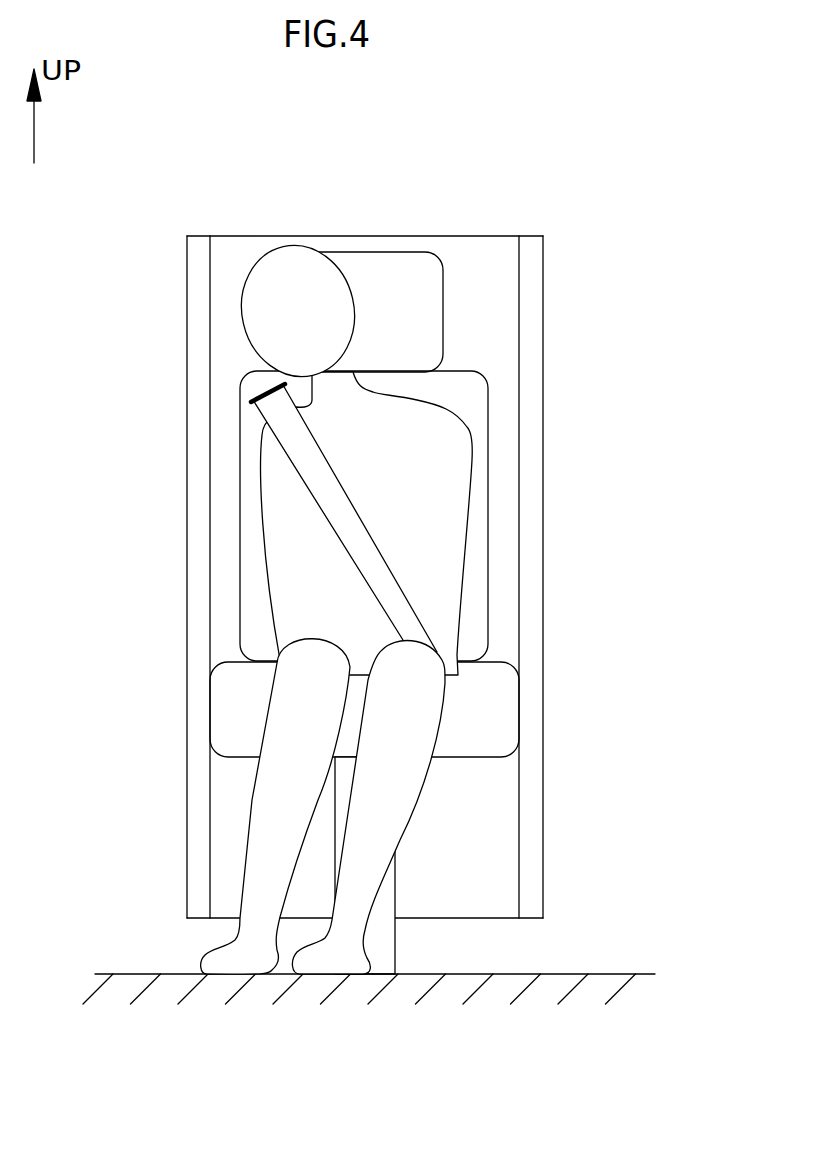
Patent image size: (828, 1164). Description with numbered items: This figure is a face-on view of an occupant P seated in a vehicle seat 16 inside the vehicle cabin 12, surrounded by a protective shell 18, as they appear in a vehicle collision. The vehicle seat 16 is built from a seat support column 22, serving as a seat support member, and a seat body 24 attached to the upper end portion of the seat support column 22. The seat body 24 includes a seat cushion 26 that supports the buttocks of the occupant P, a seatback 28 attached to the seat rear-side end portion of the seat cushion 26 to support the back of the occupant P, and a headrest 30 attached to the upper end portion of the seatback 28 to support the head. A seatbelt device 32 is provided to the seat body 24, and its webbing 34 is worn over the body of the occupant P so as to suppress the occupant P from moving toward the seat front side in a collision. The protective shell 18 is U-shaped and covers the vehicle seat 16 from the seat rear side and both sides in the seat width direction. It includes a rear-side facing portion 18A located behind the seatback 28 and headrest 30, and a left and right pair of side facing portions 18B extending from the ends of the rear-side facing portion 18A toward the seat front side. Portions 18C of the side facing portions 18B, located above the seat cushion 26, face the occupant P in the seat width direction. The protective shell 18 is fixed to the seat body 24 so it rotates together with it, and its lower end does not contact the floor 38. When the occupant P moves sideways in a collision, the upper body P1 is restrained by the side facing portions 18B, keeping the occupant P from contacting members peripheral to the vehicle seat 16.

The vehicle cabin 12 is at (92, 378).
The vehicle seat 16 is at (445, 558).
The protective shell 18 is at (378, 536).
The rear-side facing portion 18A is at (234, 262).
The side facing portion 18B is at (187, 286).
The portion of side facing portion 18C is at (187, 442).
The seat support column 22 is at (388, 890).
The seat body 24 is at (451, 516).
The seat cushion 26 is at (492, 700).
The seatback 28 is at (472, 487).
The headrest 30 is at (358, 273).
The seatbelt device 32 is at (484, 518).
The webbing 34 is at (372, 540).
The floor 38 is at (148, 974).
The occupant P is at (459, 558).
The upper body P1 is at (430, 458).